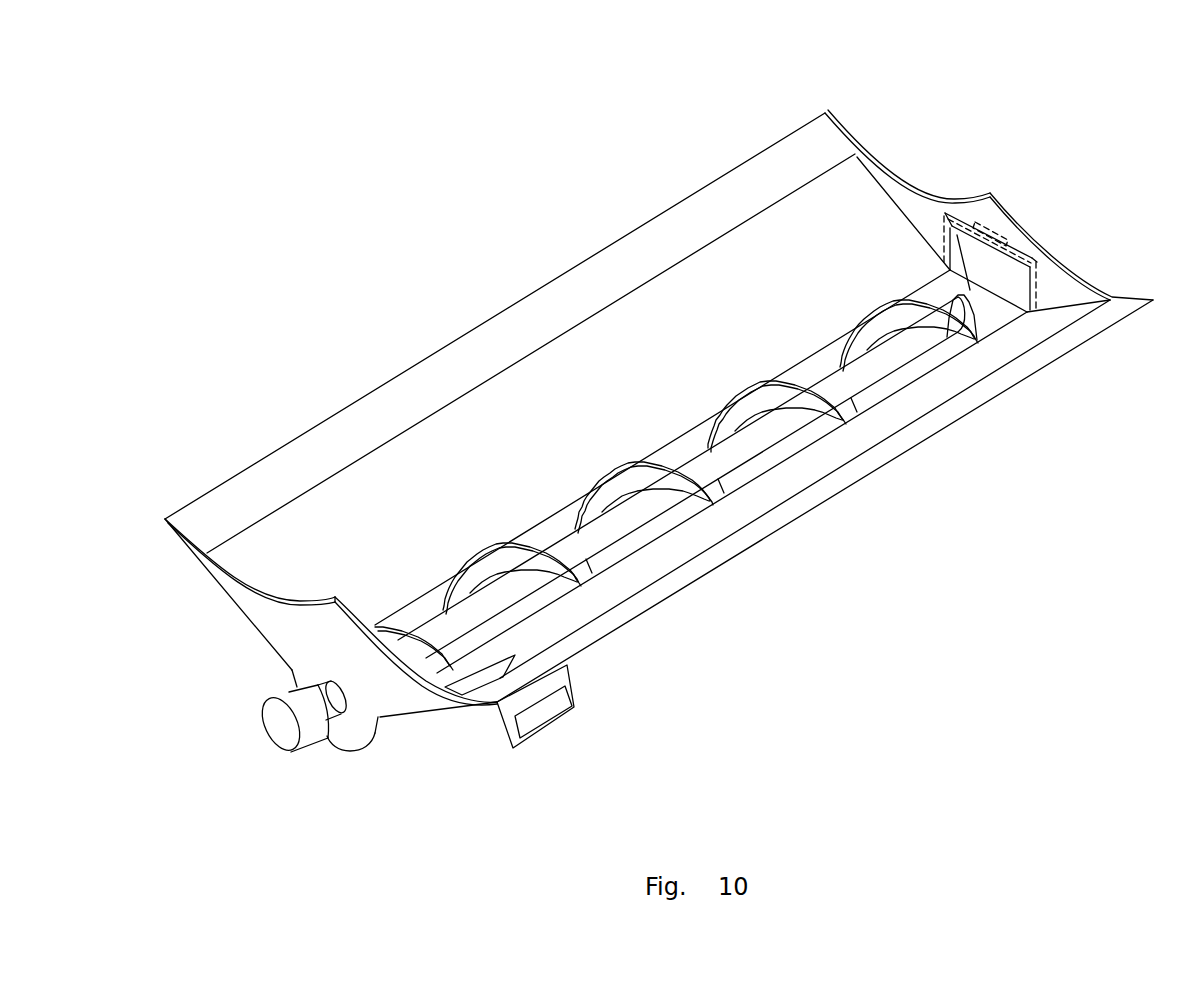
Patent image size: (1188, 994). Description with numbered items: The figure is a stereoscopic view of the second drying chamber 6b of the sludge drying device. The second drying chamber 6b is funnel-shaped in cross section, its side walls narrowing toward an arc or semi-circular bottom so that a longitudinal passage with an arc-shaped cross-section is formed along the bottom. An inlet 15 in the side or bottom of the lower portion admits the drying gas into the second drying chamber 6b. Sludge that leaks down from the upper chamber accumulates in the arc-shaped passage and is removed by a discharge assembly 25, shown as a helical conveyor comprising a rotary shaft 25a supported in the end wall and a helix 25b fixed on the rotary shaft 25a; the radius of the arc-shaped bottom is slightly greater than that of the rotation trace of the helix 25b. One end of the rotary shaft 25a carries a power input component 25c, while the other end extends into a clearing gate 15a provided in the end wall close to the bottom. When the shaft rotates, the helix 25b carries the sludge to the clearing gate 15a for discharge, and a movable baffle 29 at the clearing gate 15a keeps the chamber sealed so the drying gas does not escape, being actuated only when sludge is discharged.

The second drying chamber 6b is at (659, 430).
The discharge assembly 25 is at (579, 464).
The rotary shaft 25a is at (620, 522).
The helix 25b is at (783, 398).
The power input component 25c is at (282, 730).
The inlet 15 is at (540, 715).
The clearing gate 15a is at (950, 268).
The movable baffle 29 is at (1030, 260).